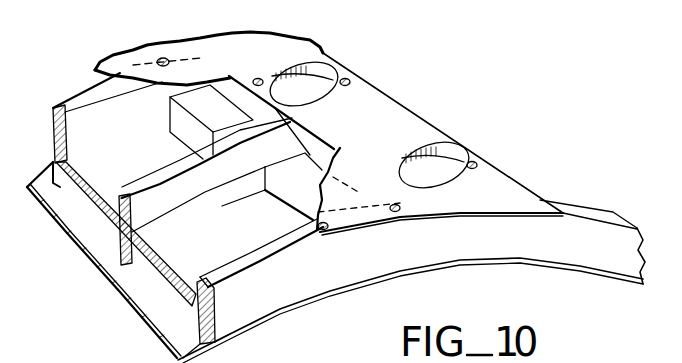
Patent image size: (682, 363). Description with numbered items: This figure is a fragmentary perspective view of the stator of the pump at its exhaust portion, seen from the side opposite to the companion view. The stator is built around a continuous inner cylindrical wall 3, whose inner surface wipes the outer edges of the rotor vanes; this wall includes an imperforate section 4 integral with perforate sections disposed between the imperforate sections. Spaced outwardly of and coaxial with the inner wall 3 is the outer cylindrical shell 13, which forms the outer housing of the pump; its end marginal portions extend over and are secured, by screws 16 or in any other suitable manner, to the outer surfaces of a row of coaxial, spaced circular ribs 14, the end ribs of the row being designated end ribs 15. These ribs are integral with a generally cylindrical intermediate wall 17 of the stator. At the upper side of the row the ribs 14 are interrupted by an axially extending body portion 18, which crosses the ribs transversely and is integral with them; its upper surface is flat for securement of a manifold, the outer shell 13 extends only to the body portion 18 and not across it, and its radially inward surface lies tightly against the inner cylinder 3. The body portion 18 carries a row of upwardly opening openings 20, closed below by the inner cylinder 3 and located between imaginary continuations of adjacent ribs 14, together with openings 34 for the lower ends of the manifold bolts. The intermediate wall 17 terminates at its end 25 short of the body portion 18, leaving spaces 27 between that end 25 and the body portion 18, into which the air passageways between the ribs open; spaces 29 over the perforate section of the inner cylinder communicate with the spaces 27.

The inner cylindrical wall 3 is at (158, 292).
The imperforate section 4 is at (175, 312).
The outer cylindrical shell 13 is at (117, 53).
The circular ribs 14 is at (85, 119).
The end ribs 15 is at (268, 271).
The screws 16 is at (180, 55).
The intermediate wall 17 is at (216, 199).
The body portion 18 is at (387, 120).
The openings 20 is at (317, 96).
The end of wall 25 is at (153, 158).
The spaces 27 is at (143, 120).
The spaces 29 is at (100, 223).
The openings 34 is at (358, 73).